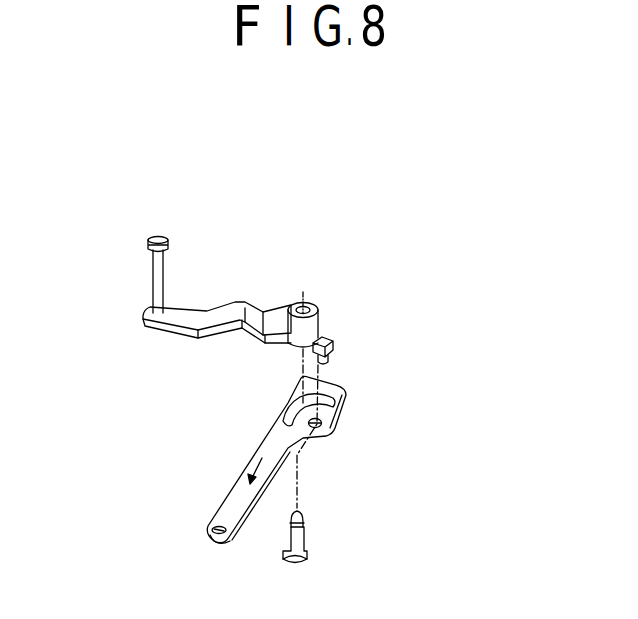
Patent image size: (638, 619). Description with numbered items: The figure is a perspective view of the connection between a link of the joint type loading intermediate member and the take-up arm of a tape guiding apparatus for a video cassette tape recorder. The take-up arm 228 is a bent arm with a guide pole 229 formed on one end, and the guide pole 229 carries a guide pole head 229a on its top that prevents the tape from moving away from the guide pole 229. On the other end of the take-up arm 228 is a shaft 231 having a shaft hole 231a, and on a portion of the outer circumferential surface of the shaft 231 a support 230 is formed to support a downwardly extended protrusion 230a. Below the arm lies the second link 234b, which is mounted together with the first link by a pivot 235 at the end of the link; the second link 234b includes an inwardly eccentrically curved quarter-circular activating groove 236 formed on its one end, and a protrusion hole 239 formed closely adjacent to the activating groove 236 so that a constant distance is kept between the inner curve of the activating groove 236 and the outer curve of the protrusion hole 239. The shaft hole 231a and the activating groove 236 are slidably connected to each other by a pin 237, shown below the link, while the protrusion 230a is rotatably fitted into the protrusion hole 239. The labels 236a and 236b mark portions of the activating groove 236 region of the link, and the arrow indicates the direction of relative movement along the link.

The take-up arm 228 is at (212, 301).
The guide pole 229 is at (152, 278).
The guide pole head 229a is at (158, 236).
The support 230 is at (333, 343).
The protrusion 230a is at (330, 354).
The shaft 231 is at (327, 298).
The shaft hole 231a is at (305, 297).
The second link 234b is at (340, 413).
The pivot 235 is at (212, 543).
The activating groove 236 is at (284, 415).
The lever arm portion 236a is at (263, 445).
The slot 236b is at (333, 394).
The pin 237 is at (304, 543).
The protrusion hole 239 is at (320, 436).